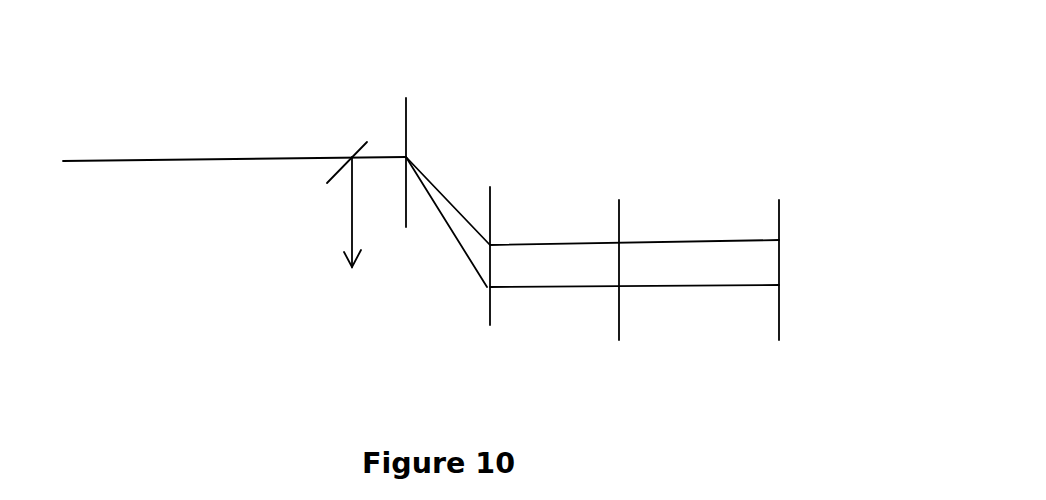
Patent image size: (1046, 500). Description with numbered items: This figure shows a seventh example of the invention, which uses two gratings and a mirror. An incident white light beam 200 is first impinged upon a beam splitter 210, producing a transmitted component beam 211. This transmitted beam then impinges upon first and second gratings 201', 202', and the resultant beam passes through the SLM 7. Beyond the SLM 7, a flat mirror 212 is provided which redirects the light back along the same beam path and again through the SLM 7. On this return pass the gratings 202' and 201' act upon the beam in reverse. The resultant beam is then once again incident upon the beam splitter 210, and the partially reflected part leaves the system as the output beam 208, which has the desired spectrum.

The incident white light beam 200 is at (98, 161).
The beam splitter 210 is at (358, 148).
The output beam 208 is at (315, 225).
The transmitted component beam 211 is at (377, 152).
The first grating 201' is at (491, 163).
The second grating 202' is at (571, 182).
The flat mirror 212 is at (779, 222).
The SLM 7 is at (619, 332).